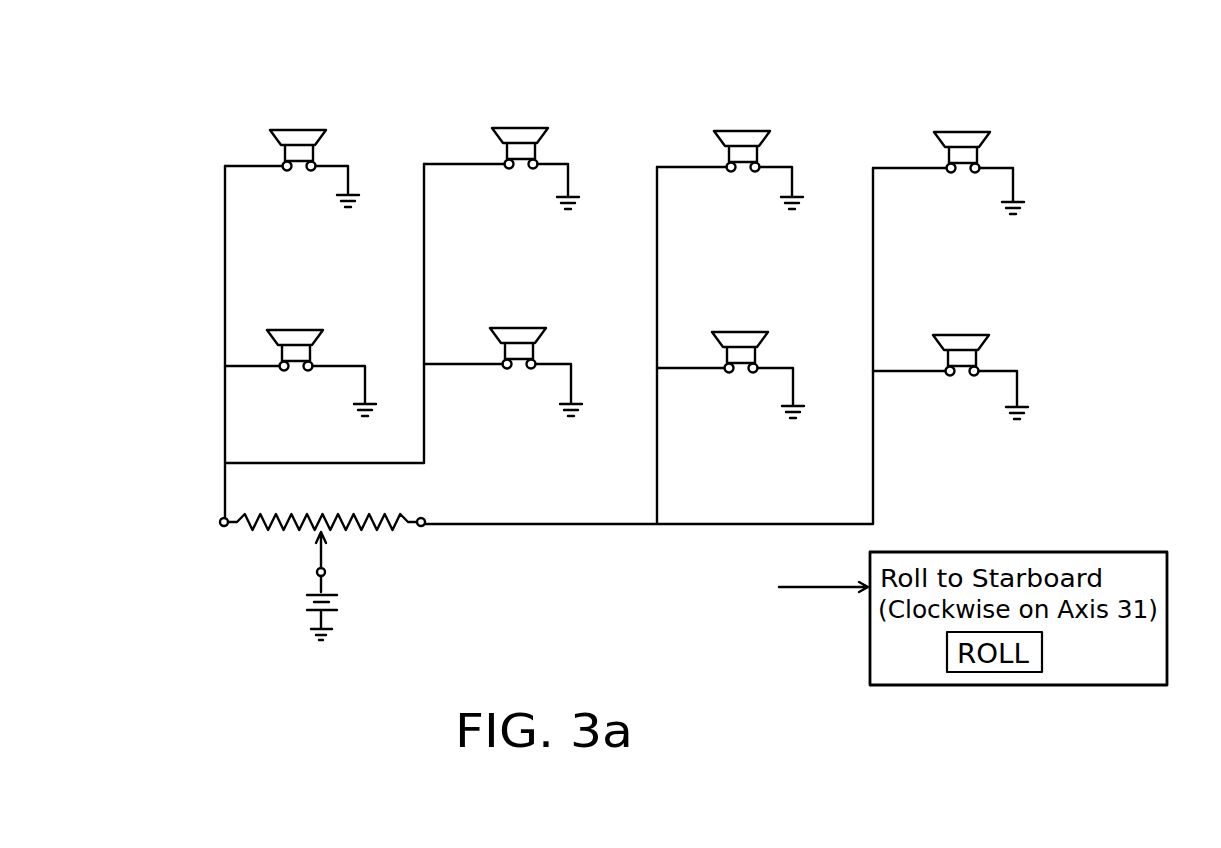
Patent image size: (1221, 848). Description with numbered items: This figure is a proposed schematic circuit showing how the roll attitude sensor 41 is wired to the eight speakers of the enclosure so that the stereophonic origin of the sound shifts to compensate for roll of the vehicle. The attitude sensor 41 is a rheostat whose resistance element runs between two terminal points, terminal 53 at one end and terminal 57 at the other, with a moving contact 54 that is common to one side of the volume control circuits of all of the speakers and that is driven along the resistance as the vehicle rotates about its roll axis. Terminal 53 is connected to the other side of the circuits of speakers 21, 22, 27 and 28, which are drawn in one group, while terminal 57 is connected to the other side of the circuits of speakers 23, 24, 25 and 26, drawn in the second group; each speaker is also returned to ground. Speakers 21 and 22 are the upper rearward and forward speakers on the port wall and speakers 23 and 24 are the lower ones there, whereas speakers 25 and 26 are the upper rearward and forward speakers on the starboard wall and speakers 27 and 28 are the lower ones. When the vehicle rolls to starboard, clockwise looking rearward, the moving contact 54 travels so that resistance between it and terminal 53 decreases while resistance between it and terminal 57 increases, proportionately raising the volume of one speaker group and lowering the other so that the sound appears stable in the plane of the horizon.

The speaker 21 is at (292, 148).
The speaker 22 is at (501, 150).
The speaker 23 is at (730, 150).
The speaker 24 is at (948, 154).
The speaker 25 is at (950, 360).
The speaker 26 is at (730, 358).
The speaker 27 is at (503, 356).
The speaker 28 is at (300, 356).
The attitude sensor 41 is at (862, 68).
The terminal point 53 is at (300, 522).
The moving contact 54 is at (309, 586).
The terminal point 57 is at (437, 538).